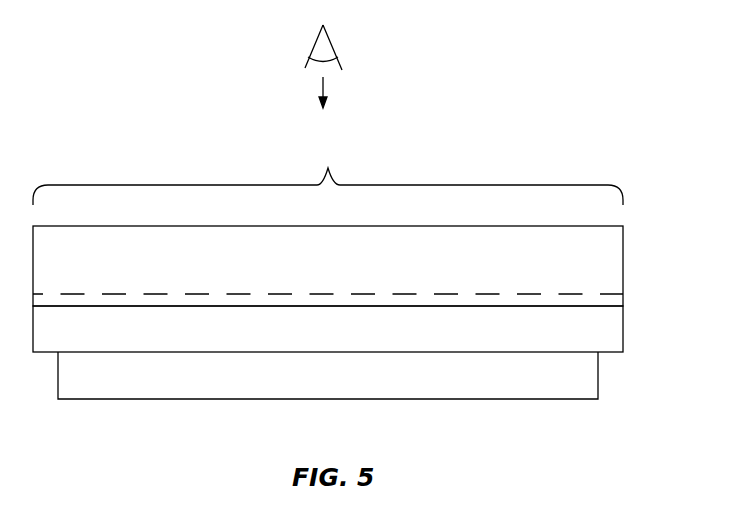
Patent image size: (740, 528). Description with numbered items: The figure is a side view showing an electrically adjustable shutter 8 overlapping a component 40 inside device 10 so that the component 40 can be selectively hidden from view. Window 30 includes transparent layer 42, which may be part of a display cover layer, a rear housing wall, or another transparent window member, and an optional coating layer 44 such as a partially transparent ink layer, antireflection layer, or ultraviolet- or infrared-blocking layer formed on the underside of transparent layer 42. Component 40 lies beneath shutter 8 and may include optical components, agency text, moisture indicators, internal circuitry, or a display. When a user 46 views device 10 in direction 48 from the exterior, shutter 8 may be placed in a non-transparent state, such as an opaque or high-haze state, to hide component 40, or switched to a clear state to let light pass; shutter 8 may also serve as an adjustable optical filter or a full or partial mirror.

The device 10 is at (611, 101).
The user 46 is at (332, 42).
The direction 48 is at (325, 90).
The window 30 is at (328, 176).
The transparent layer 42 is at (624, 257).
The coating layer 44 is at (575, 294).
The electrically adjustable shutter 8 is at (624, 332).
The component 40 is at (599, 378).